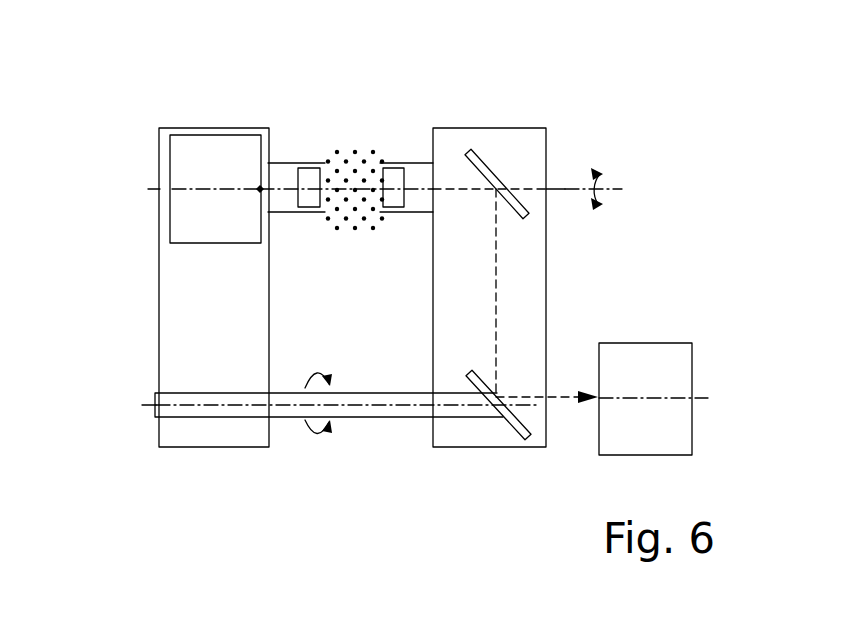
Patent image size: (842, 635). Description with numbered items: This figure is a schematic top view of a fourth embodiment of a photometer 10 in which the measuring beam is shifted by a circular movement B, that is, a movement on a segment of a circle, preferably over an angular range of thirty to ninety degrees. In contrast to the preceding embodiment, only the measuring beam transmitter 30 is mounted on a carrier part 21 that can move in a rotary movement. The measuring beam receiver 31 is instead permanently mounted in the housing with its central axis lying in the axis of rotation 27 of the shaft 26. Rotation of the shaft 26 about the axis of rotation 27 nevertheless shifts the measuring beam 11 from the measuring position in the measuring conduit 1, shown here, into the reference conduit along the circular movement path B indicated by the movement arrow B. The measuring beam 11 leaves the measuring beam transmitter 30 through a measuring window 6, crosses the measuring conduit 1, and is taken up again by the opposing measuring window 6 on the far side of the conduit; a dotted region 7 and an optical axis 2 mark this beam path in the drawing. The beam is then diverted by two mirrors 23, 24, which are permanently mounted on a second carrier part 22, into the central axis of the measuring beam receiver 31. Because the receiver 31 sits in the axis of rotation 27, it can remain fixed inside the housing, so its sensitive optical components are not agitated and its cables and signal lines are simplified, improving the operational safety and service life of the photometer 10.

The photometer 10 is at (376, 86).
The optical axis 2 is at (148, 188).
The carrier part 21 is at (229, 293).
The measuring beam transmitter 30 is at (209, 167).
The measuring conduit 1 is at (285, 213).
The measuring window 6 is at (310, 203).
The sample / scattering region 7 is at (357, 170).
The measuring beam 11 is at (415, 186).
The second carrier part 22 is at (476, 295).
The mirror 23 is at (470, 151).
The circular movement B is at (580, 209).
The mirror 24 is at (518, 433).
The shaft 26 is at (403, 412).
The axis of rotation 27 is at (142, 404).
The measuring beam receiver 31 is at (685, 375).